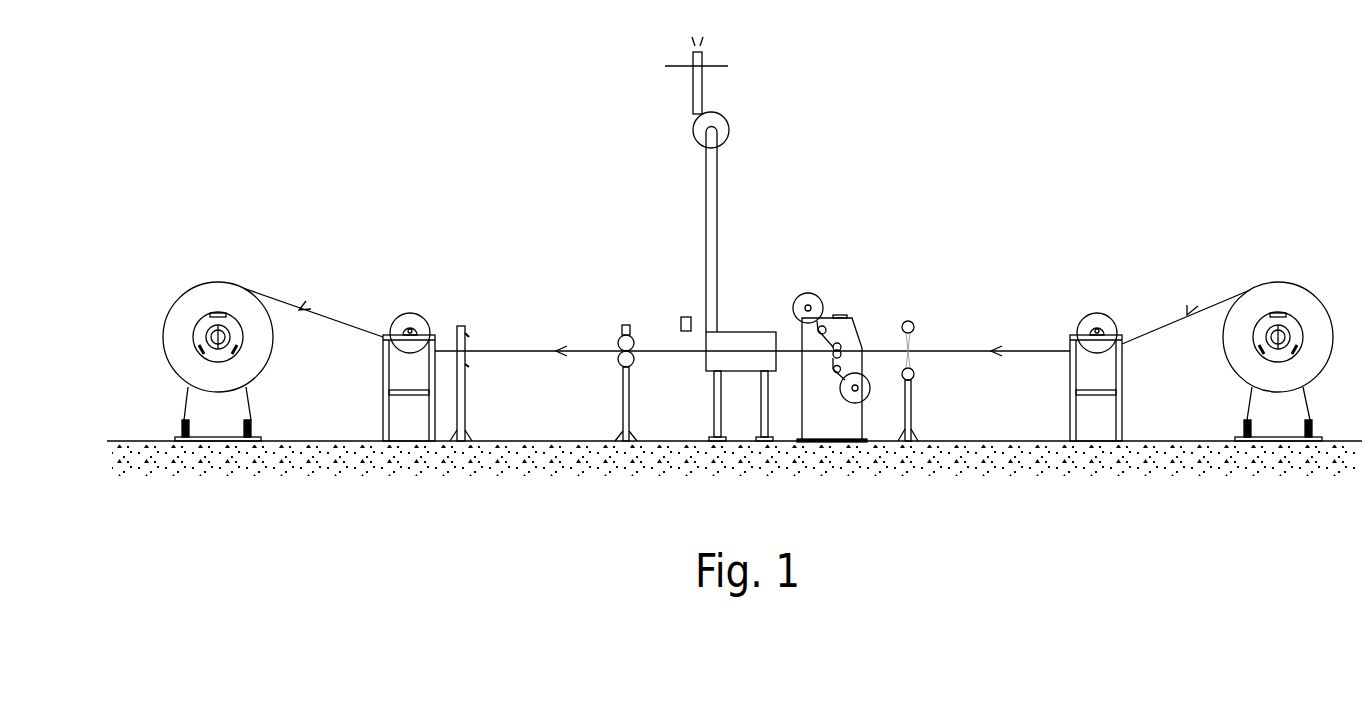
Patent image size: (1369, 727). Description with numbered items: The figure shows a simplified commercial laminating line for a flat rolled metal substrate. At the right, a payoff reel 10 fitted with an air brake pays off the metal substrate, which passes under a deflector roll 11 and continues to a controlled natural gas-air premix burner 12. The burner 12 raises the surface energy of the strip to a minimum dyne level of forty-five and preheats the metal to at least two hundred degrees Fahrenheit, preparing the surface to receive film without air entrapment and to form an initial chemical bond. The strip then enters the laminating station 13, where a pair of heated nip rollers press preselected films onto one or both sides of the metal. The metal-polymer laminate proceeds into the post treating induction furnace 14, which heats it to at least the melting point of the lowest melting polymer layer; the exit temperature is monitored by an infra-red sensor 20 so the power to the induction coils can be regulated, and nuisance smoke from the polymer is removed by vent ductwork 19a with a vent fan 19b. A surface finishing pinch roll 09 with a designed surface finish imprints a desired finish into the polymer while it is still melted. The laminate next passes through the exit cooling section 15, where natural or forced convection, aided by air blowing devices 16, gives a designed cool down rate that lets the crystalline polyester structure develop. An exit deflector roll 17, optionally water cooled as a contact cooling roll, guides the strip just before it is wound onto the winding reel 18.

The payoff reel 10 is at (1279, 282).
The deflector roll 11 is at (1097, 297).
The natural gas-air premix burner 12 is at (908, 297).
The laminating station 13 is at (838, 297).
The post treating induction furnace 14 is at (755, 297).
The exit cooling section 15 is at (567, 297).
The air blowing devices 16 is at (464, 297).
The exit deflector roll 17 is at (409, 297).
The winding reel 18 is at (217, 281).
The vent ductwork 19a is at (718, 182).
The vent fan 19b is at (695, 145).
The infra-red sensor 20 is at (687, 297).
The surface finishing pinch roll 09 is at (626, 297).